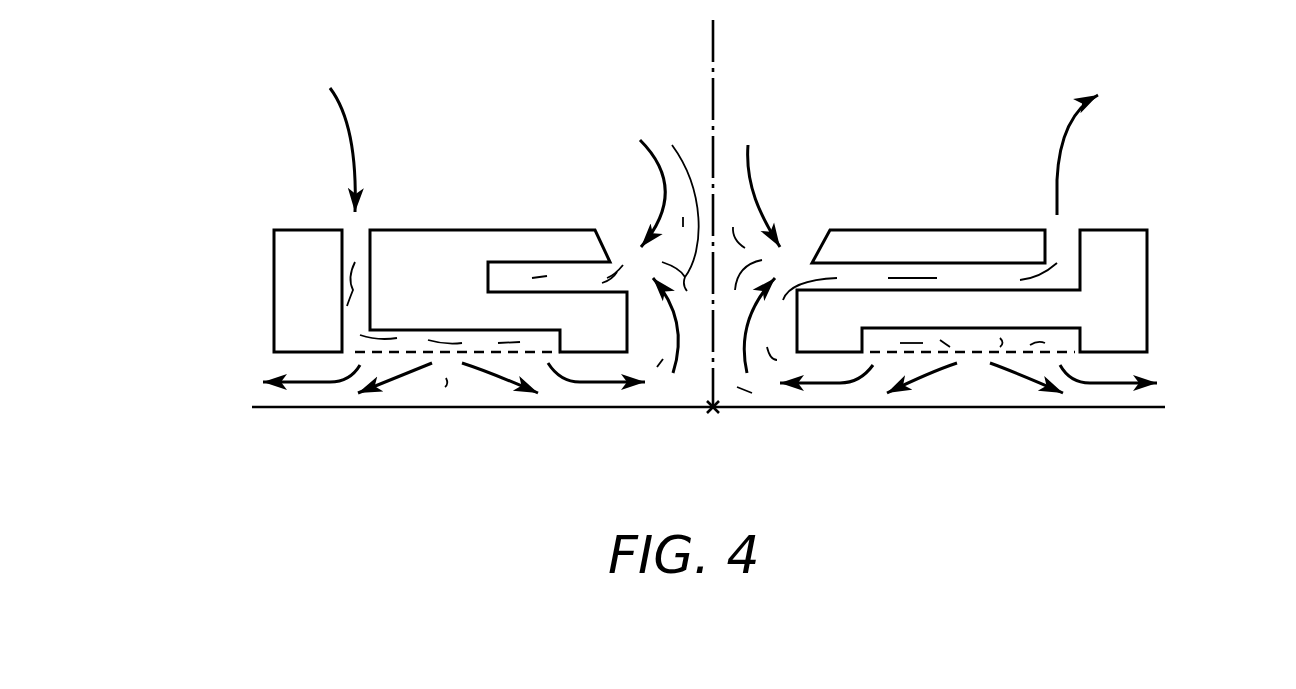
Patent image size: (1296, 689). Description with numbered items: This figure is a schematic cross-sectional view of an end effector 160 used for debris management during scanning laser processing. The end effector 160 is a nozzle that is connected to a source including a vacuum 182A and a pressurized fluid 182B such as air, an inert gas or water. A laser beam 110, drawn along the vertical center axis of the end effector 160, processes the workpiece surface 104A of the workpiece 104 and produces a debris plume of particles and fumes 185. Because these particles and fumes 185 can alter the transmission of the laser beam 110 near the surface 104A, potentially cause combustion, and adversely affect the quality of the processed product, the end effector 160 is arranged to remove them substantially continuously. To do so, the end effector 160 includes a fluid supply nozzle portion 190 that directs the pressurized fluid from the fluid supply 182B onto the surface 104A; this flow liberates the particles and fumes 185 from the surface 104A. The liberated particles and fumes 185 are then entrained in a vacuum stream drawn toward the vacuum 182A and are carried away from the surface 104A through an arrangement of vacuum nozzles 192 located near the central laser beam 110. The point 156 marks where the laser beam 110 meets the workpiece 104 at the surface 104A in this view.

The workpiece 104 is at (278, 408).
The workpiece surface 104A is at (1165, 407).
The laser beam 110 is at (712, 40).
The center point 156 is at (713, 412).
The end effector 160 is at (238, 267).
The vacuum 182A is at (1127, 80).
The pressurized fluid 182B is at (350, 57).
The particles and fumes 185 is at (533, 443).
The fluid supply nozzle portion 190 is at (330, 383).
The vacuum nozzles 192 is at (627, 247).